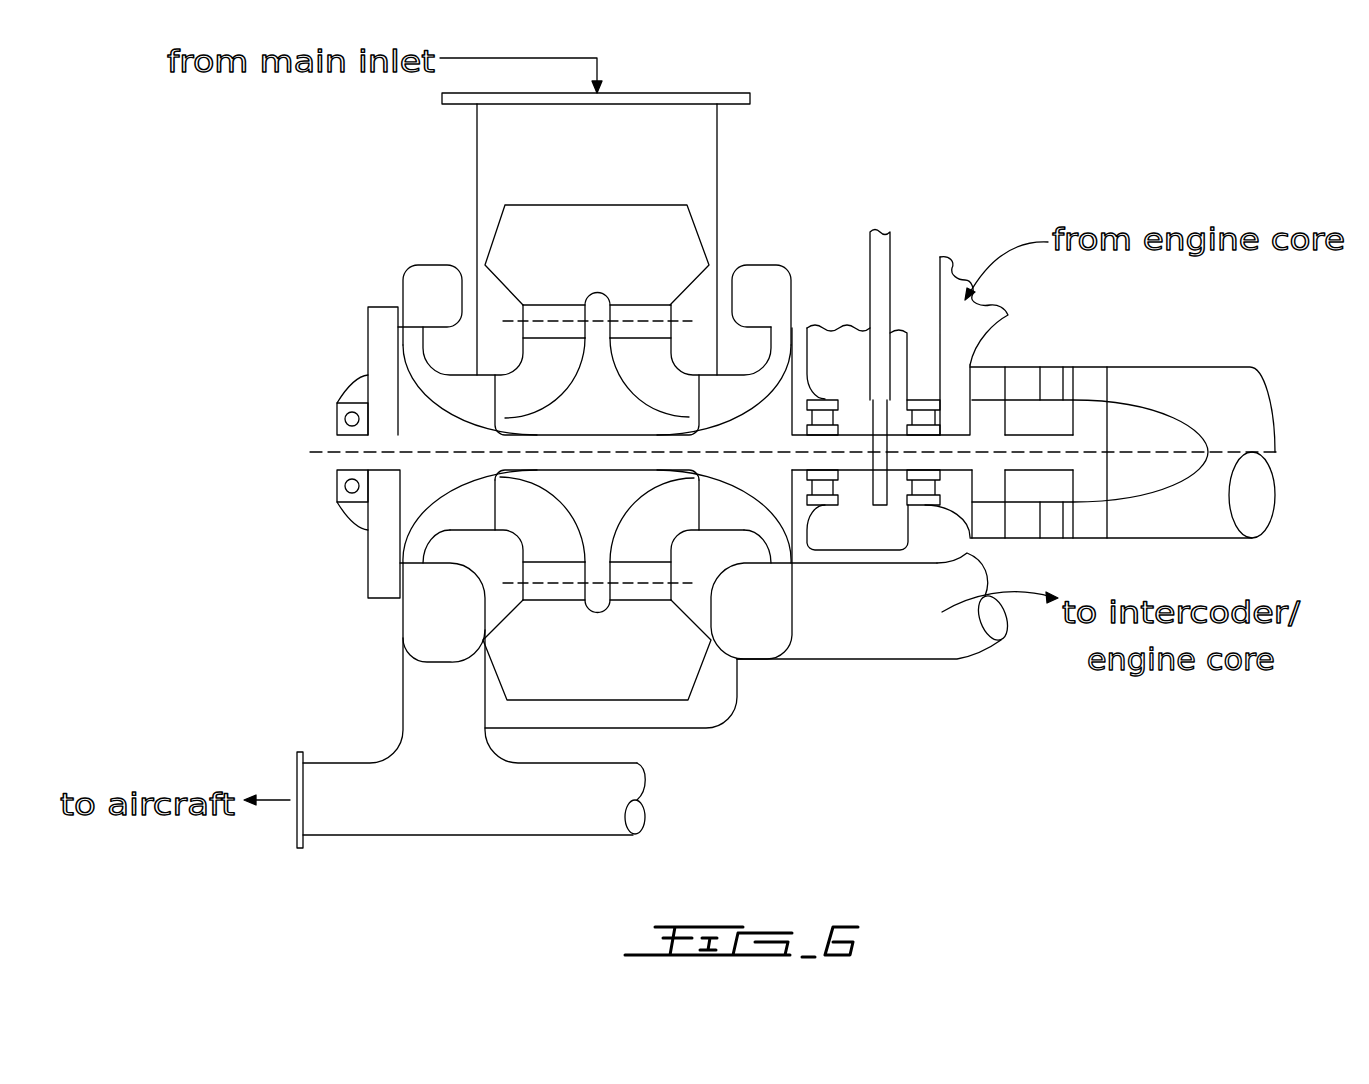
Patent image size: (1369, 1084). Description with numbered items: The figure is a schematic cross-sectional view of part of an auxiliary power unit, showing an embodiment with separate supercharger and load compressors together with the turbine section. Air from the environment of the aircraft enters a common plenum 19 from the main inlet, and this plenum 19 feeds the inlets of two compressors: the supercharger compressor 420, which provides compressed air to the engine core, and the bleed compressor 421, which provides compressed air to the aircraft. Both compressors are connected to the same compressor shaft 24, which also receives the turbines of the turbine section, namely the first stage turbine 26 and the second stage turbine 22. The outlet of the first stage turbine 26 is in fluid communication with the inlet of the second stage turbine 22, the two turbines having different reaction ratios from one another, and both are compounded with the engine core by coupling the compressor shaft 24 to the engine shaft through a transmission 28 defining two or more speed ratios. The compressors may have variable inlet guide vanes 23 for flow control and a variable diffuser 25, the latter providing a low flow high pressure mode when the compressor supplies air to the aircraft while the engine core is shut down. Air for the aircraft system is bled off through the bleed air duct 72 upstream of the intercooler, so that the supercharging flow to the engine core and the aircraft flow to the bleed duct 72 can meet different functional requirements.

The plenum 19 is at (604, 167).
The bleed compressor 421 is at (418, 348).
The supercharger compressor 420 is at (778, 355).
The compressor shaft 24 is at (537, 433).
The variable inlet guide vanes 23 is at (558, 602).
The variable diffuser 25 is at (420, 620).
The transmission 28 is at (878, 286).
The second stage turbine 22 is at (1092, 388).
The first stage turbine 26 is at (992, 480).
The bleed air duct 72 is at (343, 813).